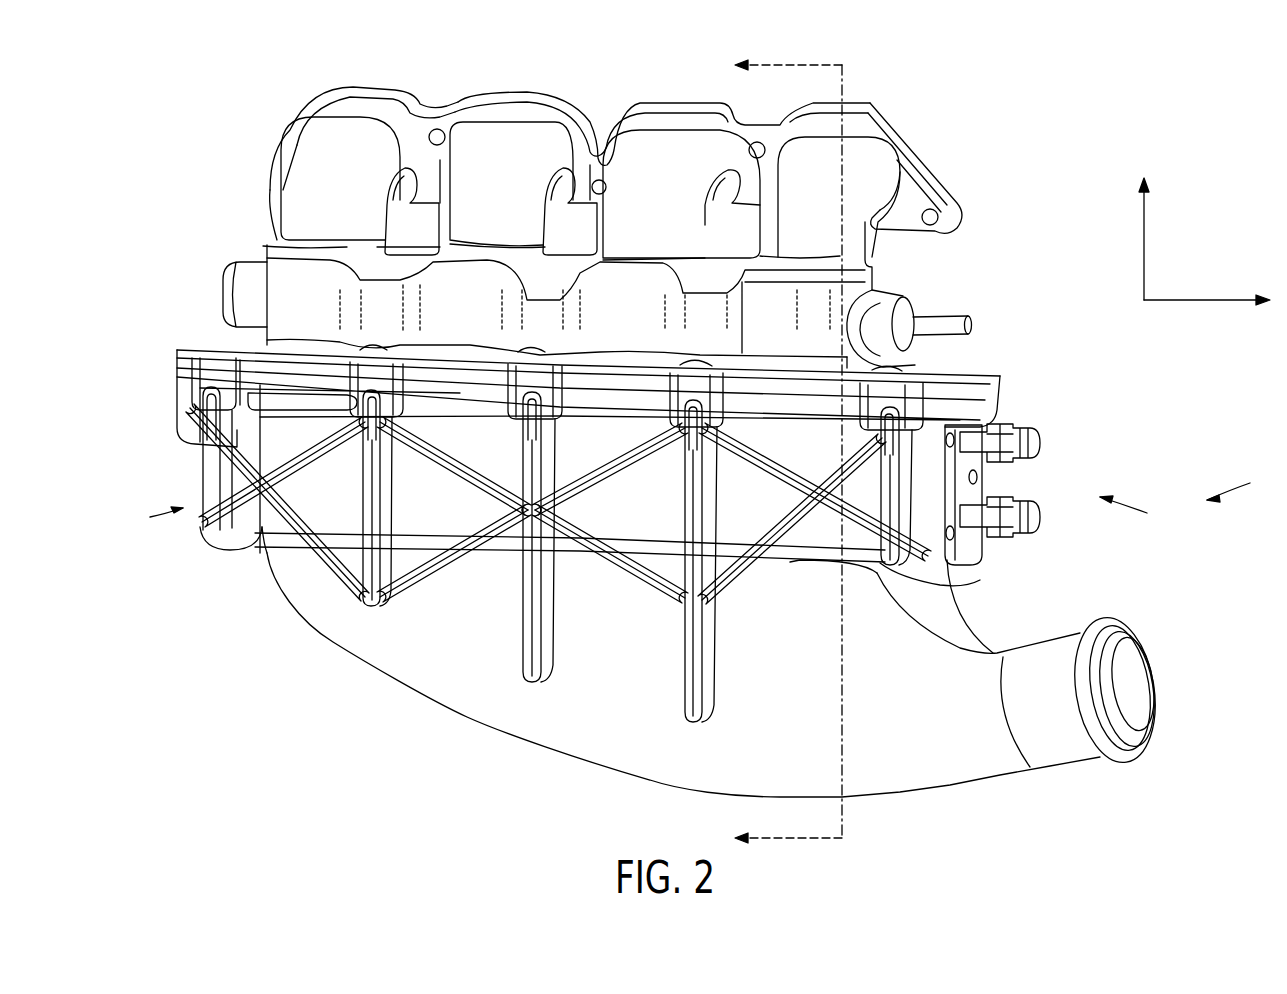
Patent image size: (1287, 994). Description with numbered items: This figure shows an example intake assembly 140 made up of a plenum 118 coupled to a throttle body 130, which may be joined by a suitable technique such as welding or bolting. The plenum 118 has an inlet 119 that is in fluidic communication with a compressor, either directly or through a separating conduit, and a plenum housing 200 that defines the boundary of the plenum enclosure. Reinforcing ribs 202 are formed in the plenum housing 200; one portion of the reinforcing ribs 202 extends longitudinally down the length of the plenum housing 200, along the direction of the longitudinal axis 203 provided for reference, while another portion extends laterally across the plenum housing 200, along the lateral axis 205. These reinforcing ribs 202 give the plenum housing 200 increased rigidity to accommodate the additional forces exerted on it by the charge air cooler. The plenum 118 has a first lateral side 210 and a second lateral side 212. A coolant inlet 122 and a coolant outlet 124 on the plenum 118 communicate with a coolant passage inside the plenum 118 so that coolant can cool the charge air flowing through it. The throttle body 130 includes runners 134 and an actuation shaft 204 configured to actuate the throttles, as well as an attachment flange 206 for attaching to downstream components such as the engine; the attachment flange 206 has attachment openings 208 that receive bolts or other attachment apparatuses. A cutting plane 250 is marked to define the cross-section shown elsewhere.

The plenum 118 is at (110, 380).
The inlet 119 is at (1170, 608).
The coolant inlet 122 is at (1040, 440).
The coolant outlet 124 is at (1040, 522).
The throttle body 130 is at (110, 65).
The runners 134 is at (344, 197).
The intake assembly 140 is at (1244, 488).
The plenum housing 200 is at (934, 729).
The reinforcing ribs 202 is at (383, 493).
The longitudinal axis 203 is at (1147, 213).
The actuation shaft 204 is at (933, 323).
The lateral axis 205 is at (1237, 297).
The attachment flange 206 is at (910, 123).
The attachment openings 208 is at (441, 130).
The first lateral side 210 is at (146, 521).
The second lateral side 212 is at (1139, 511).
The cutting plane 250 is at (845, 66).